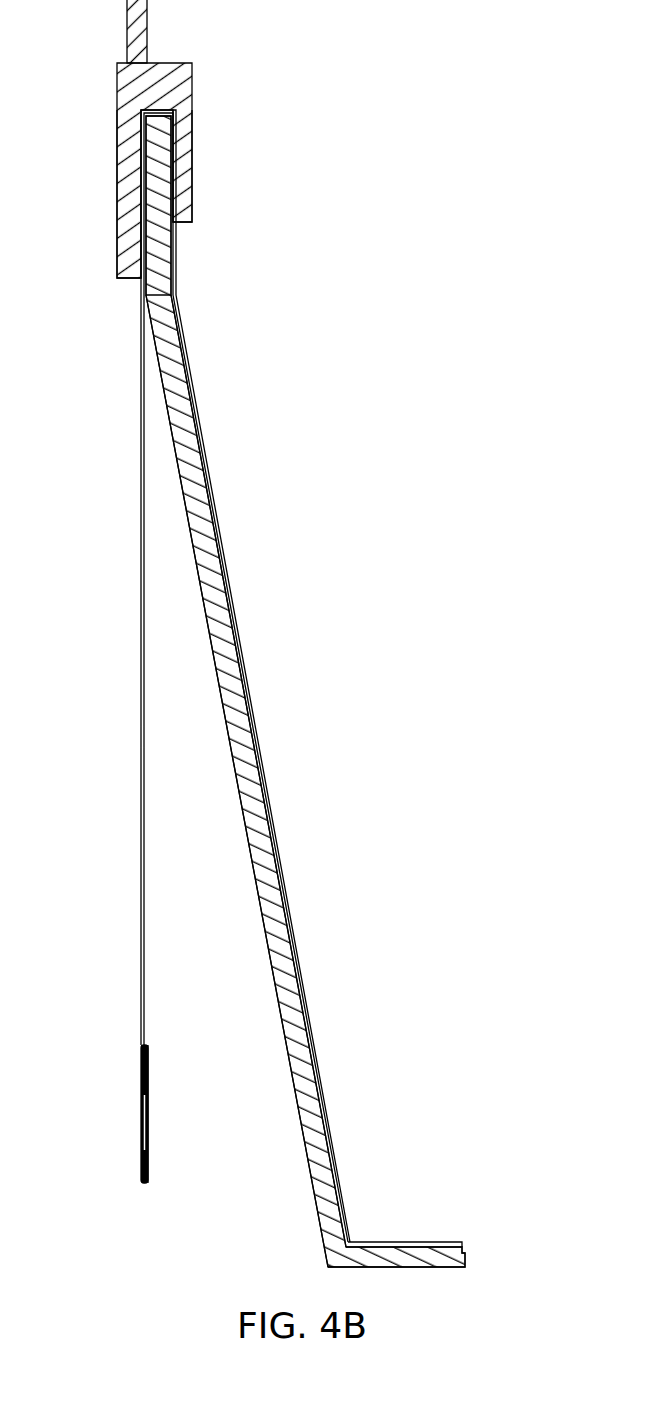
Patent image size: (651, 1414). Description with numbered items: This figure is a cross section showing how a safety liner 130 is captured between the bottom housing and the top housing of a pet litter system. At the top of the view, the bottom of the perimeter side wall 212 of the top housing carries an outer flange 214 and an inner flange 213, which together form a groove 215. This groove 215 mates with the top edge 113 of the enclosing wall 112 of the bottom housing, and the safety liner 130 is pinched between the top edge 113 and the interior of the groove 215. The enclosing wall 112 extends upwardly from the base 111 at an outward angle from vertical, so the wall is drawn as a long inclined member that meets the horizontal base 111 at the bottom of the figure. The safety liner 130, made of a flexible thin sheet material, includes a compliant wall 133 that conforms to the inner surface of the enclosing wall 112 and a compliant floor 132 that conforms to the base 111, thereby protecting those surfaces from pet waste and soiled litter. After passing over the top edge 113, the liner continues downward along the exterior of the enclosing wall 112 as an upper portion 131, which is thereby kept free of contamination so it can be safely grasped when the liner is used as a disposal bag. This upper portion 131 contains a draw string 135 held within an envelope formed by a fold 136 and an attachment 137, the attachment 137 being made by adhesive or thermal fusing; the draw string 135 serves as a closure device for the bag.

The perimeter side wall 212 is at (147, 8).
The groove 215 is at (157, 111).
The outer flange 214 is at (117, 177).
The inner flange 213 is at (193, 168).
The top edge 113 is at (160, 115).
The safety liner 130 is at (155, 113).
The compliant wall 133 is at (185, 378).
The enclosing wall 112 is at (262, 908).
The base 111 is at (465, 1257).
The compliant floor 132 is at (398, 1243).
The upper portion 131 is at (142, 1110).
The attachment 137 is at (142, 1057).
The draw string 135 is at (142, 1163).
The fold 136 is at (148, 1128).